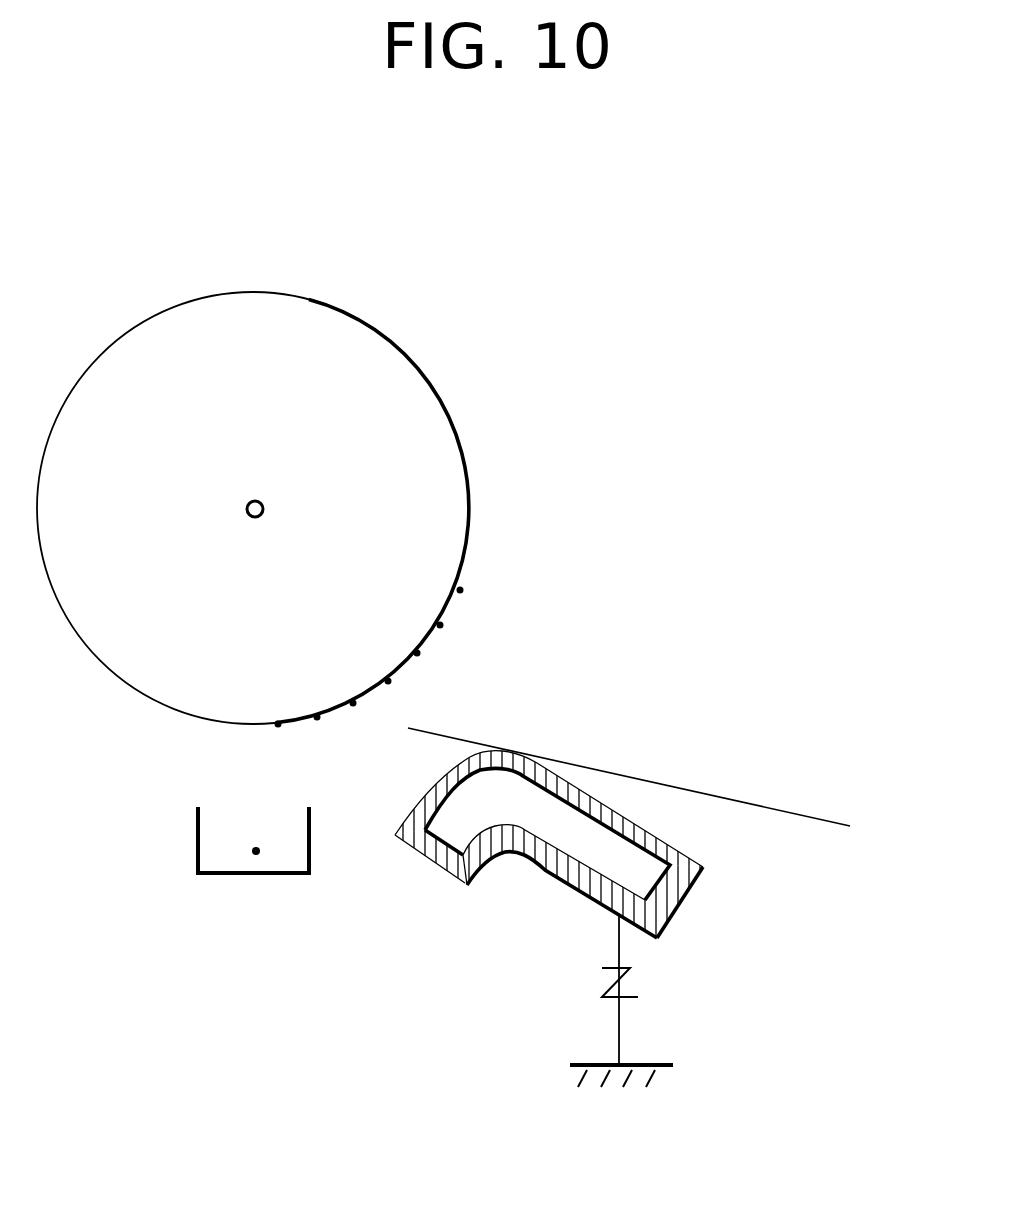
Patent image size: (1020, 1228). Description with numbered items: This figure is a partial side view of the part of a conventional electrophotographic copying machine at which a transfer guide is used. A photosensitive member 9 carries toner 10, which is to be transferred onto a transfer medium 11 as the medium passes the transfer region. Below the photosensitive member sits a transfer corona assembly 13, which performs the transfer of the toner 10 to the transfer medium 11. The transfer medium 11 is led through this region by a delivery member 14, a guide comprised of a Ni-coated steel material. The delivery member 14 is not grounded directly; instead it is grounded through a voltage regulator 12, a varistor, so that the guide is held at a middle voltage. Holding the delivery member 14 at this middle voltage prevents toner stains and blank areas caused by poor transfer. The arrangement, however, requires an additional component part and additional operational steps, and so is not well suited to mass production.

The photosensitive member 9 is at (437, 388).
The toner 10 is at (457, 583).
The transfer medium 11 is at (680, 790).
The voltage regulator 12 is at (638, 987).
The transfer corona assembly 13 is at (197, 850).
The delivery member 14 is at (433, 865).